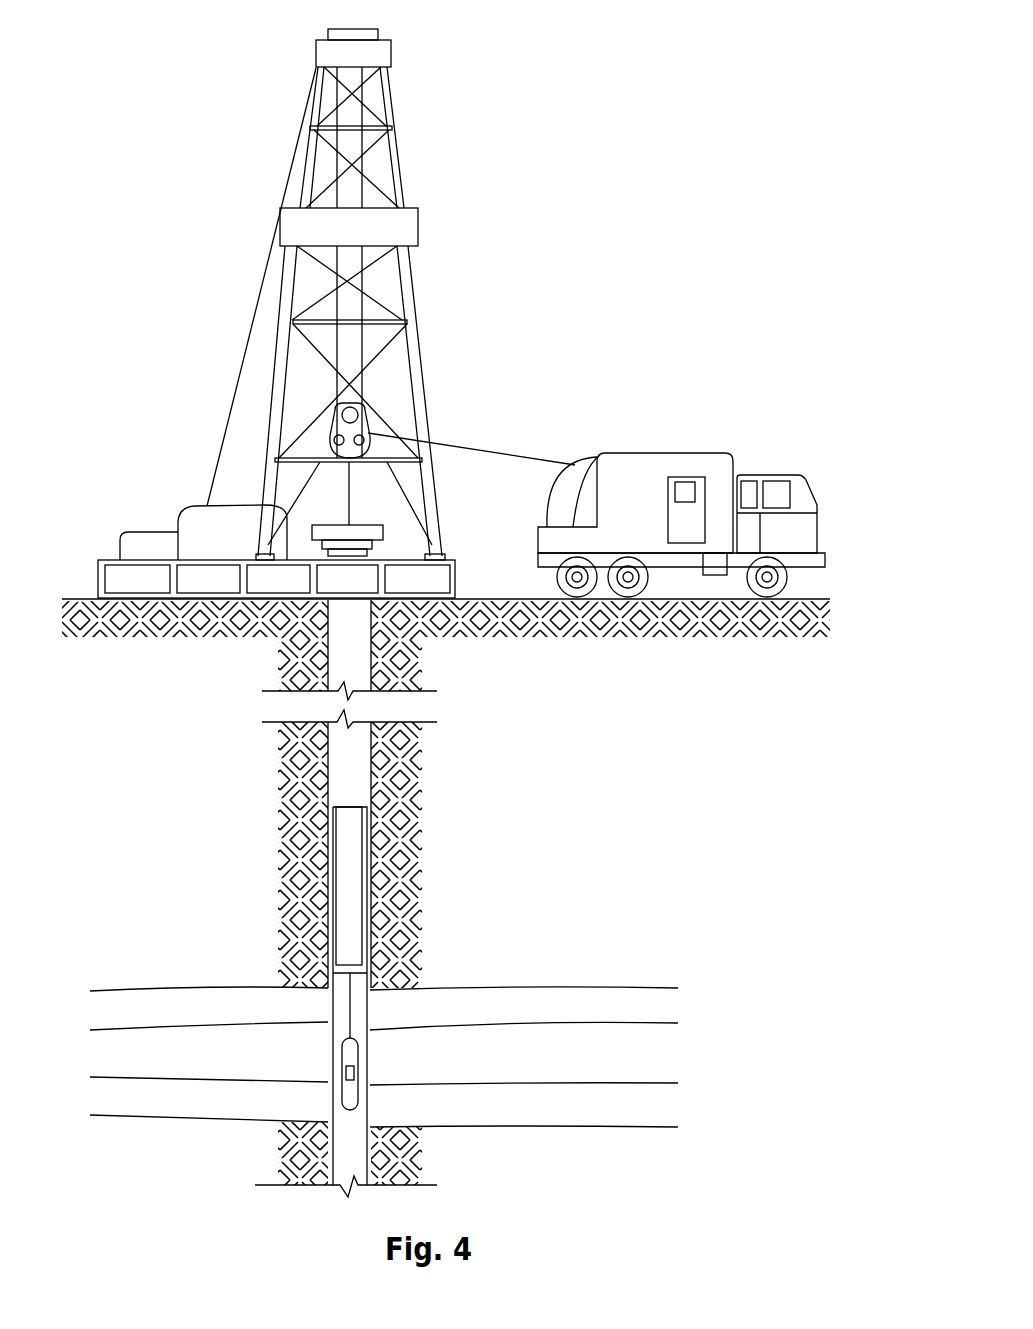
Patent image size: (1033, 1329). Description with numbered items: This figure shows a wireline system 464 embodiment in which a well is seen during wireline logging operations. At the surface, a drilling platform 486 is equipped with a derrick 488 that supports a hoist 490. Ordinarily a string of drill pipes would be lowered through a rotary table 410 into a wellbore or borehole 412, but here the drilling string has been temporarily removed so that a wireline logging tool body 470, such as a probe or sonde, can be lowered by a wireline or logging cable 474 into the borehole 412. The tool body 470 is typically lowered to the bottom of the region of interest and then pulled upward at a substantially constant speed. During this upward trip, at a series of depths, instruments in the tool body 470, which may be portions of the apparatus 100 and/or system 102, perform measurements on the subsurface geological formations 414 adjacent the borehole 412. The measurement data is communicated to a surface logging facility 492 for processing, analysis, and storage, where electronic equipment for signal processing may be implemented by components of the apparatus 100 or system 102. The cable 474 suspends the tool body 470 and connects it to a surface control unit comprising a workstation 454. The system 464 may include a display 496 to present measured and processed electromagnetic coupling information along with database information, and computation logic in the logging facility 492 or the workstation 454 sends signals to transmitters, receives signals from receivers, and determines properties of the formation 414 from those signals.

The wireline system 464 is at (613, 237).
The derrick 488 is at (440, 548).
The hoist 490 is at (366, 410).
The rotary table 410 is at (381, 524).
The wireline or logging cable 474 is at (473, 450).
The drilling platform 486 is at (457, 586).
The surface logging facility 492 is at (630, 453).
The workstation 454 is at (667, 517).
The display 496 is at (687, 483).
The borehole 412 is at (332, 1003).
The wireline logging tool body 470 is at (358, 1046).
The apparatus 100 is at (428, 1074).
The system 102 is at (356, 1070).
The subsurface geological formations 414 is at (692, 985).